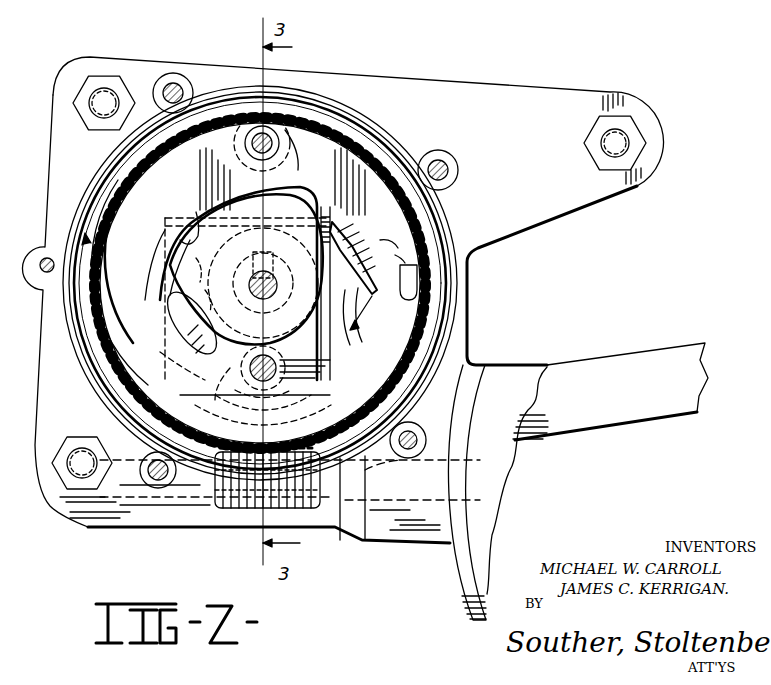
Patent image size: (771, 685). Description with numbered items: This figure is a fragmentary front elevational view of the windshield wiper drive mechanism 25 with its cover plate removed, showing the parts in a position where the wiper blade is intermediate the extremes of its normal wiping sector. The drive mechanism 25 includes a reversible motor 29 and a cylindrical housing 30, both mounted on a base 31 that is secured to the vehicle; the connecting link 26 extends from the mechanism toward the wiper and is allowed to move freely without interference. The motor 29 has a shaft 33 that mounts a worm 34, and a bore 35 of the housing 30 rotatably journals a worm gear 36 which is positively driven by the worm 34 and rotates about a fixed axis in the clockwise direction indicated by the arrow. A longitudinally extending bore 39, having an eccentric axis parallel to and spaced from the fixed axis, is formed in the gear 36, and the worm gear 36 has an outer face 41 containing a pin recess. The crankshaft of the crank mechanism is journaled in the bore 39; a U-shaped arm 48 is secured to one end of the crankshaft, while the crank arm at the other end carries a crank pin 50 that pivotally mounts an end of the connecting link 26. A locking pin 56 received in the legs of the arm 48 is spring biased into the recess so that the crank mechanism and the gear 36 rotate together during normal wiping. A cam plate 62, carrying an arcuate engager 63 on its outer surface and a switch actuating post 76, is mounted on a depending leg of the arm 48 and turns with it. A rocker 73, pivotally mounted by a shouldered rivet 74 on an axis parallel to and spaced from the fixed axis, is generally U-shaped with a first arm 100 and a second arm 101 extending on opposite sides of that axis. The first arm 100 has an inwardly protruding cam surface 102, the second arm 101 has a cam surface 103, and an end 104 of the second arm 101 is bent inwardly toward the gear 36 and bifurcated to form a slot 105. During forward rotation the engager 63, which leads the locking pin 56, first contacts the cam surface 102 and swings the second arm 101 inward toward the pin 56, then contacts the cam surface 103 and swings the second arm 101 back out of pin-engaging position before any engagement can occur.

The drive mechanism 25 is at (470, 72).
The connecting link 26 is at (626, 430).
The reversible motor 29 is at (463, 562).
The cylindrical housing 30 is at (363, 122).
The base 31 is at (145, 60).
The shaft 33 is at (383, 504).
The worm 34 is at (228, 505).
The bore 35 is at (191, 285).
The worm gear 36 is at (122, 362).
The longitudinally extending bore 39 is at (240, 262).
The outer face 41 is at (423, 331).
The U-shaped arm 48 is at (172, 360).
The crank pin 50 is at (285, 388).
The locking pin 56 is at (245, 387).
The cam plate 62 is at (272, 368).
The arcuate engager 63 is at (192, 322).
The rocker 73 is at (298, 172).
The shouldered rivet 74 is at (250, 150).
The switch actuating post 76 is at (275, 272).
The first arm 100 is at (228, 266).
The second arm 101 is at (432, 206).
The cam surface 102 is at (196, 205).
The cam surface 103 is at (354, 276).
The end 104 is at (413, 298).
The slot 105 is at (402, 270).